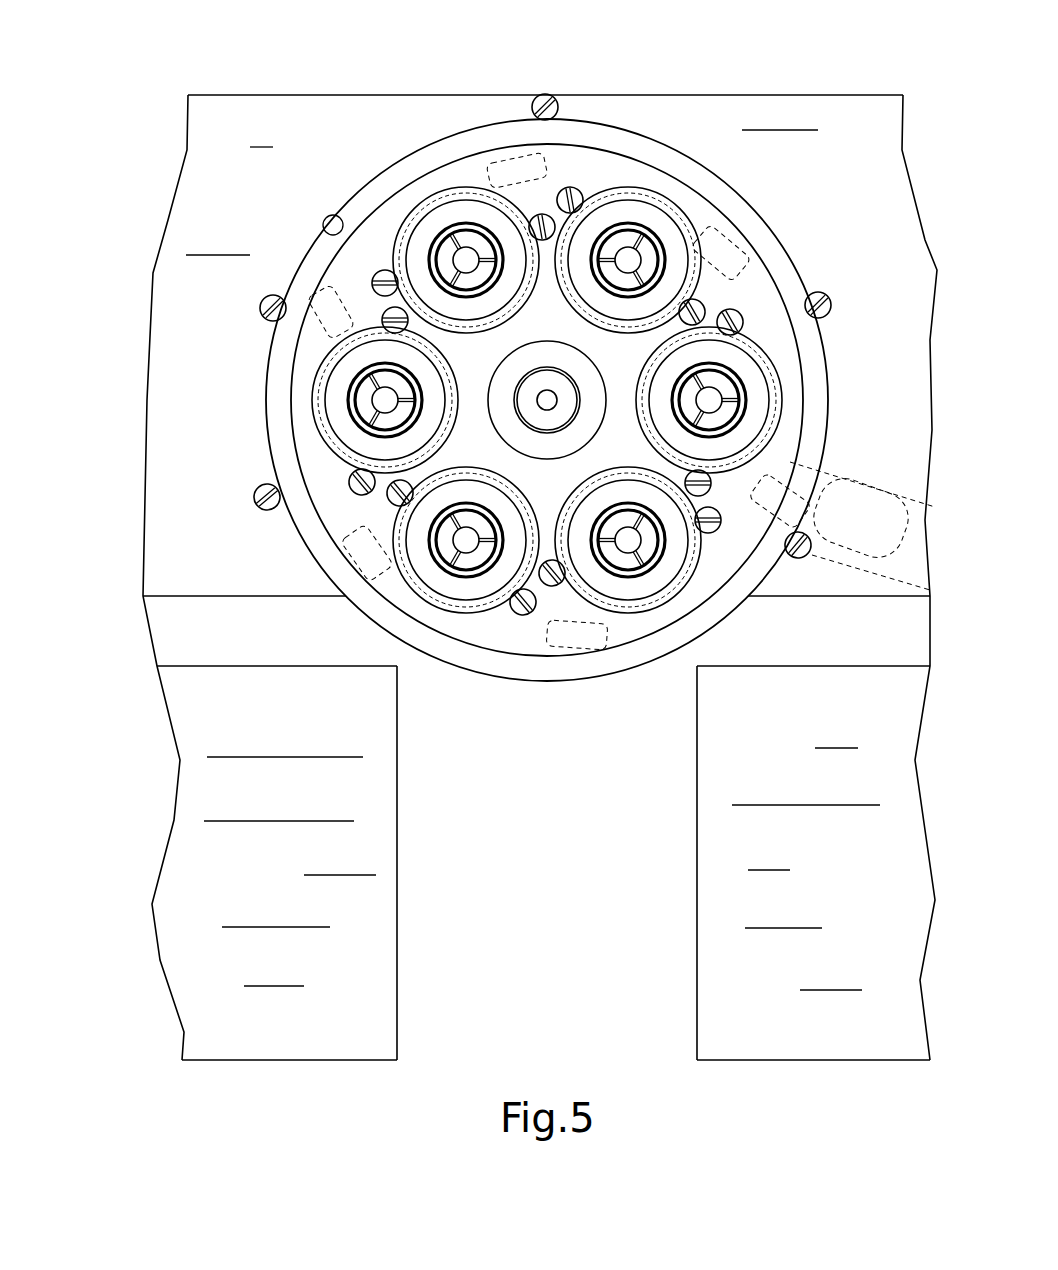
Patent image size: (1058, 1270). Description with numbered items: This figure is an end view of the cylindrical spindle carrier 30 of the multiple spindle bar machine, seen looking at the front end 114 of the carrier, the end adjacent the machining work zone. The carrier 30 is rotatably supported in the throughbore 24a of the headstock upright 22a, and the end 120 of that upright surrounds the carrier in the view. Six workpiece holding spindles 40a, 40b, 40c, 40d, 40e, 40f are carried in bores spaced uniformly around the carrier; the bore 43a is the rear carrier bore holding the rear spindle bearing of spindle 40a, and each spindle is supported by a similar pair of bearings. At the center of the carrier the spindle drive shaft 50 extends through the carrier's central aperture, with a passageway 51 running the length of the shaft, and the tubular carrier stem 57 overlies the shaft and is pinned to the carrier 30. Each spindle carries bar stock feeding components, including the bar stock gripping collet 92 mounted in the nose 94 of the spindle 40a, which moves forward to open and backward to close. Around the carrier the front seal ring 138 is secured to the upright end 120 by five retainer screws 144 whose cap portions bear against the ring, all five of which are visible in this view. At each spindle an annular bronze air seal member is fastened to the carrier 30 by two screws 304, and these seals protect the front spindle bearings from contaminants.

The upright 22a is at (128, 290).
The throughbore 24a is at (333, 215).
The spindle carrier 30 is at (672, 138).
The spindle 40a is at (675, 196).
The spindle 40b is at (453, 188).
The spindle 40c is at (326, 459).
The spindle 40d is at (430, 618).
The spindle 40e is at (655, 622).
The spindle 40f is at (798, 391).
The bore 43a is at (675, 262).
The spindle drive shaft 50 is at (560, 383).
The passageway 51 is at (540, 400).
The spindle drive shaft carrier stem 57 is at (547, 445).
The bar stock gripping collet 92 is at (652, 243).
The nose 94 is at (676, 272).
The front end 114 is at (518, 632).
The end 120 is at (258, 220).
The front seal ring 138 is at (815, 425).
The retainer screws 144 is at (556, 100).
The screws 304 is at (700, 308).